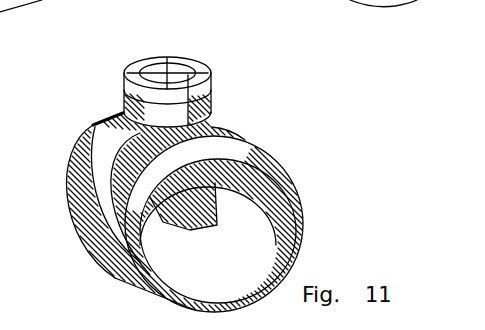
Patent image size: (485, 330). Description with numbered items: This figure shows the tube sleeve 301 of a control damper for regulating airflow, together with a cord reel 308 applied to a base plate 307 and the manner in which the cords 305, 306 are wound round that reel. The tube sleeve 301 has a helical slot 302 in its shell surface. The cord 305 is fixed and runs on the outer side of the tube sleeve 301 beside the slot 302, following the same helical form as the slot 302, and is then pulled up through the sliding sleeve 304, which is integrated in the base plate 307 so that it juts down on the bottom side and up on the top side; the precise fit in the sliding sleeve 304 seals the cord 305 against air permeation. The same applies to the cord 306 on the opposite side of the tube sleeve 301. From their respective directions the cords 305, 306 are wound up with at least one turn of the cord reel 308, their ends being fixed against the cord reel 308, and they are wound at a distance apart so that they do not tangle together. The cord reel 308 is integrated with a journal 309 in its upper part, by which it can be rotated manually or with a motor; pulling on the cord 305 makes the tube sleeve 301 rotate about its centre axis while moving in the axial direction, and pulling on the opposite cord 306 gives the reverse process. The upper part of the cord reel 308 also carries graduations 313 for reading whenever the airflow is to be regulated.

The tube sleeve 301 is at (60, 172).
The helical slot 302 is at (57, 202).
The sliding sleeve 304 is at (222, 97).
The cord 305 is at (93, 112).
The cord 306 is at (211, 93).
The base plate 307 is at (112, 110).
The cord reel 308 is at (125, 64).
The journal 309 is at (210, 63).
The graduations 313 is at (210, 63).